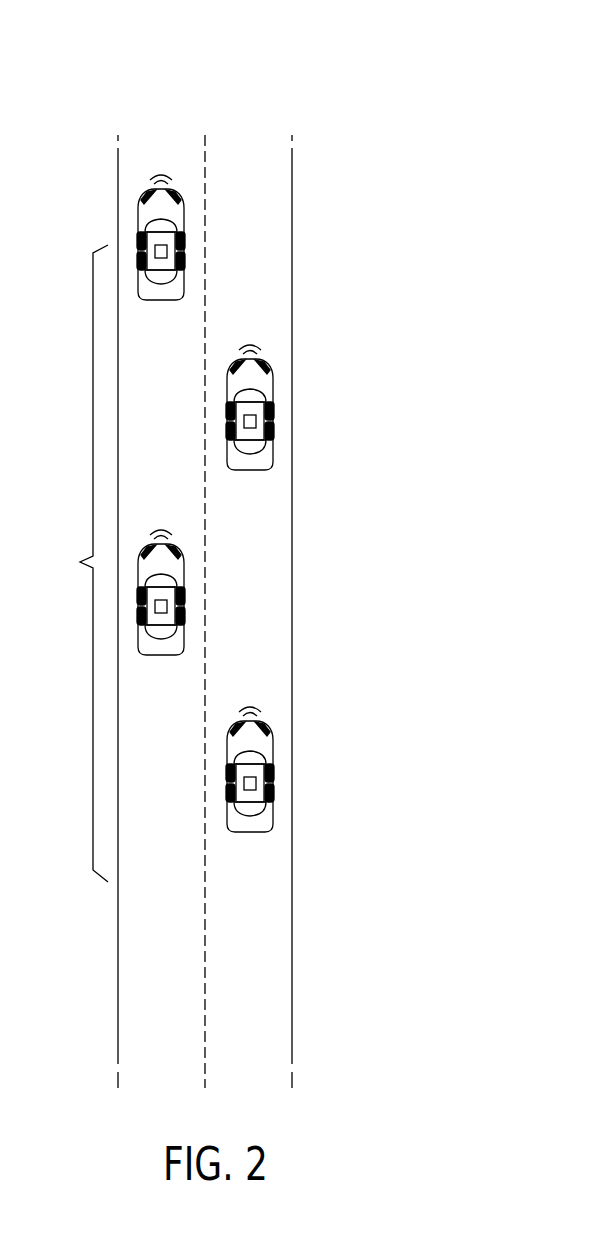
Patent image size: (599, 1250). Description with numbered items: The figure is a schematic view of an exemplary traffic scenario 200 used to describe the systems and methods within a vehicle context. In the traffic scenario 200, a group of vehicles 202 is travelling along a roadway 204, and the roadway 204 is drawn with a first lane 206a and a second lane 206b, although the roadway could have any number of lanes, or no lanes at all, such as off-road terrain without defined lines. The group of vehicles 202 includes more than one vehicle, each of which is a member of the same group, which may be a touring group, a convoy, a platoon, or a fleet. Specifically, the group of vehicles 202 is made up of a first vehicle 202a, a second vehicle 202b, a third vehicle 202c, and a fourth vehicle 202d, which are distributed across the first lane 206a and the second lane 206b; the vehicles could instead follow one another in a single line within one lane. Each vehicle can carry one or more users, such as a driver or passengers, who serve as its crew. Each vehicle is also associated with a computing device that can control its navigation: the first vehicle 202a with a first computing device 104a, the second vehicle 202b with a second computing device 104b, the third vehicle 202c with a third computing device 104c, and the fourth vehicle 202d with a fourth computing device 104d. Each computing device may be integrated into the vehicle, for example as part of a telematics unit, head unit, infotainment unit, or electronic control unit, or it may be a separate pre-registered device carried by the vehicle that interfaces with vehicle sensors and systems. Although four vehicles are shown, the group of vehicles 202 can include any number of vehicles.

The traffic scenario 200 is at (405, 49).
The group of vehicles 202 is at (72, 563).
The first vehicle 202a is at (185, 210).
The second vehicle 202b is at (185, 563).
The third vehicle 202c is at (273, 378).
The fourth vehicle 202d is at (273, 740).
The first computing device 104a is at (168, 254).
The second computing device 104b is at (168, 611).
The third computing device 104c is at (257, 427).
The fourth computing device 104d is at (257, 786).
The roadway 204 is at (244, 580).
The first lane 206a is at (163, 137).
The second lane 206b is at (248, 137).